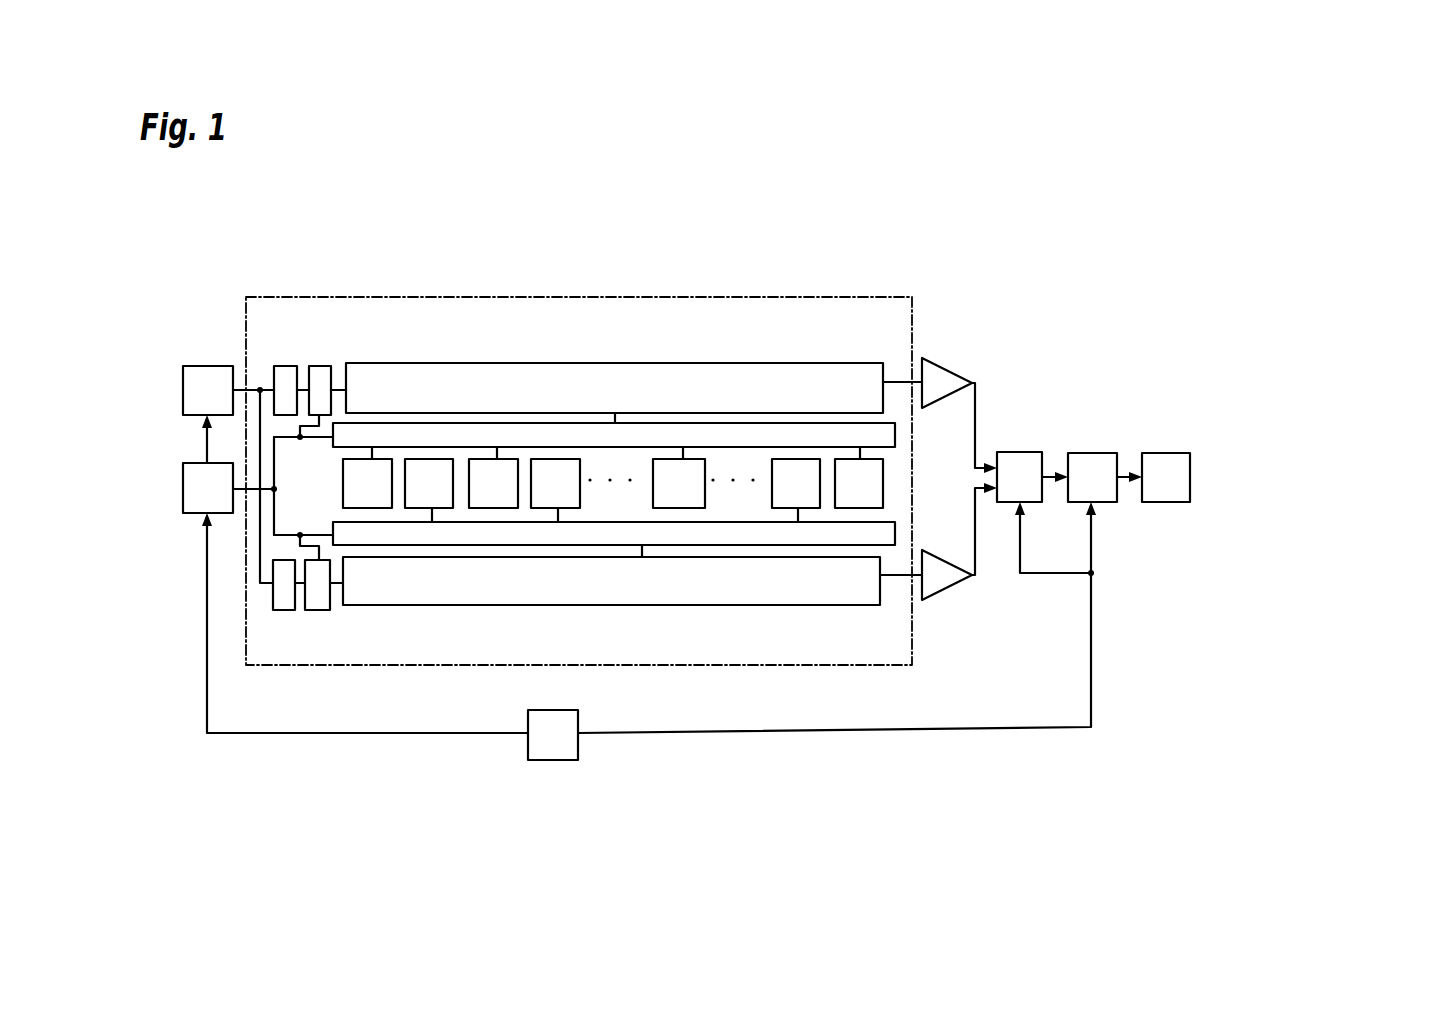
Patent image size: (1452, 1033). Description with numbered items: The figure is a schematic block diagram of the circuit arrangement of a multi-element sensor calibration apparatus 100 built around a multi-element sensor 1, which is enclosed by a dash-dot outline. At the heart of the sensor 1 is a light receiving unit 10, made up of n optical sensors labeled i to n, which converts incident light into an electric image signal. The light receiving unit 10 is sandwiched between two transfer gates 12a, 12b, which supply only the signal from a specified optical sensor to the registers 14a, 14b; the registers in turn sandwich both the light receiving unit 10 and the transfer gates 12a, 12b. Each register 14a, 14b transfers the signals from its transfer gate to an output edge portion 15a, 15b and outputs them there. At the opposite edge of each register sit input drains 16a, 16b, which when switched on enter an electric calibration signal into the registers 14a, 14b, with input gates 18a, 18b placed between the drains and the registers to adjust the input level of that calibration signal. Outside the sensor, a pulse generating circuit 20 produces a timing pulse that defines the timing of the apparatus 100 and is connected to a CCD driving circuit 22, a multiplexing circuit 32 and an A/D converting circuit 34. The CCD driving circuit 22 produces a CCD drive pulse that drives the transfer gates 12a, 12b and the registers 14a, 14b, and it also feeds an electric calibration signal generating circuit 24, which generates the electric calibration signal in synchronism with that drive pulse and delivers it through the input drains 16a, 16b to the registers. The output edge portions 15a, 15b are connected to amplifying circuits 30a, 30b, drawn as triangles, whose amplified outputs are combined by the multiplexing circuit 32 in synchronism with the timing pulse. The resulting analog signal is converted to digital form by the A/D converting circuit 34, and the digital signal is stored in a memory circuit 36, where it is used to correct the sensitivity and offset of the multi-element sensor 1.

The multi-element sensor calibration apparatus 100 is at (762, 147).
The multi-element sensor 1 is at (560, 297).
The light receiving unit 10 is at (908, 489).
The transfer gate 12a is at (895, 435).
The transfer gate 12b is at (895, 533).
The register 14a is at (560, 363).
The register 14b is at (592, 605).
The output edge portion 15a is at (887, 380).
The output edge portion 15b is at (880, 578).
The input drain 16a is at (284, 366).
The input drain 16b is at (277, 610).
The input gate 18a is at (319, 366).
The input gate 18b is at (320, 610).
The pulse generating circuit 20 is at (548, 760).
The CCD driving circuit 22 is at (190, 513).
The electric calibration signal generating circuit 24 is at (195, 366).
The amplifying circuit 30a is at (938, 374).
The amplifying circuit 30b is at (933, 590).
The multiplexing circuit 32 is at (1018, 452).
The A/D converting circuit 34 is at (1083, 453).
The memory circuit 36 is at (1157, 502).